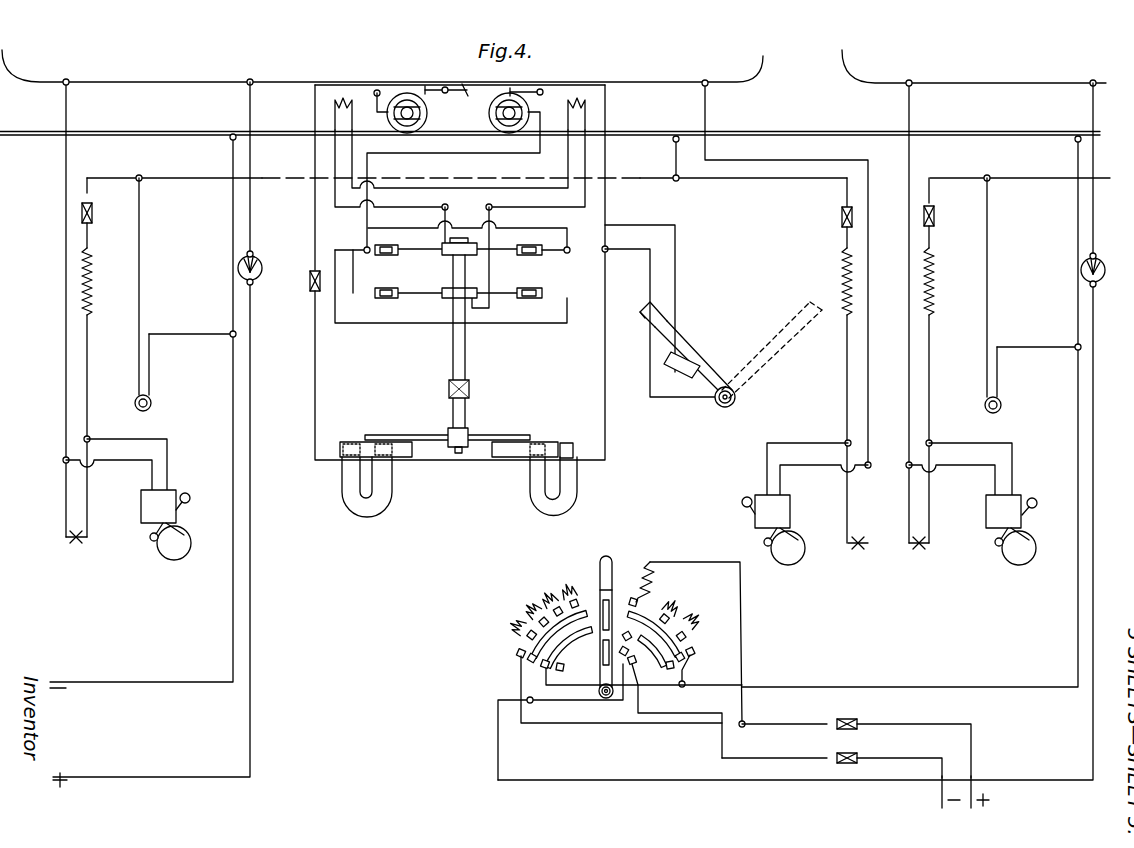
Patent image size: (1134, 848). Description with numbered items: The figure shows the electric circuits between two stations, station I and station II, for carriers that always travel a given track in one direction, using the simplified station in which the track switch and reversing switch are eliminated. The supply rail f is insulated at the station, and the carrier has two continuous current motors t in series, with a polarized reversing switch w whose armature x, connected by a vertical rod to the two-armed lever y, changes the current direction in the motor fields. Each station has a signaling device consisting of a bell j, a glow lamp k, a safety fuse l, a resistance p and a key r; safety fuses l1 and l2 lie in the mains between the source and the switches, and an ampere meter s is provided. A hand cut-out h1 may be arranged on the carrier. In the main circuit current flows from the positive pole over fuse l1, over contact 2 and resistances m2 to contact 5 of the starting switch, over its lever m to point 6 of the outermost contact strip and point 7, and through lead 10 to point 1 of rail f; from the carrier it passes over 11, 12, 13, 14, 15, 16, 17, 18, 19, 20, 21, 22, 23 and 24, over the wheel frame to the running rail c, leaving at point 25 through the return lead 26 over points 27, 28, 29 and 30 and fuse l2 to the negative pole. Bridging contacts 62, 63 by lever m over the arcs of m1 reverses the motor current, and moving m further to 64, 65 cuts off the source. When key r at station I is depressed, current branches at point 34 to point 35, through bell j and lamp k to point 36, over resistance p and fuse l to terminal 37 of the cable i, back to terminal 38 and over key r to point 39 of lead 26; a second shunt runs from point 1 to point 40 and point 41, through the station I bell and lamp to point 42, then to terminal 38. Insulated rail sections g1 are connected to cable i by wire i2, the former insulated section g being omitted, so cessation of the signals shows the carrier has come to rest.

The point of rail f 1 is at (254, 82).
The contact of starting switch 2 is at (519, 656).
The contact of starting switch 5 is at (577, 600).
The point of outermost contact strip 6 is at (530, 640).
The point of contact strip 7 is at (520, 722).
The lead 10 is at (251, 592).
The point of motor circuit 11 is at (374, 90).
The point of motor circuit 12 is at (406, 94).
The point of motor circuit 13 is at (448, 89).
The point of motor circuit 14 is at (508, 94).
The point of motor circuit 15 is at (520, 100).
The point of motor circuit 16 is at (368, 254).
The point of motor circuit 17 is at (545, 290).
The point of motor circuit 18 is at (450, 300).
The point of motor circuit 19 is at (492, 210).
The point of motor circuit 20 is at (449, 208).
The point of motor circuit 21 is at (450, 252).
The point of motor circuit 22 is at (526, 256).
The point of motor circuit 23 is at (610, 248).
The point of motor circuit 24 is at (544, 92).
The point of running rail c 25 is at (233, 134).
The return lead 26 is at (236, 262).
The point of return lead 27 is at (722, 724).
The point of return circuit 28 is at (548, 705).
The point of return circuit 29 is at (562, 672).
The point of return circuit 30 is at (636, 676).
The point of rail f at station II 34 is at (781, 261).
The point of signal circuit 35 is at (864, 470).
The point of signal circuit 36 is at (845, 446).
The terminal of cable i 37 is at (678, 181).
The terminal of cable i 38 is at (141, 176).
The point of return lead 39 is at (231, 337).
The point of rail circuit 40 is at (69, 80).
The point of signal circuit 41 is at (63, 461).
The point of signal circuit 42 is at (92, 438).
The contact of starting switch 62 is at (640, 604).
The contact of starting switch 63 is at (598, 640).
The contact of starting switch 64 is at (670, 620).
The contact of starting switch 65 is at (694, 656).
The running rails c is at (1110, 122).
The supply rail f is at (244, 82).
The cable i is at (186, 178).
The wire i2 is at (677, 160).
The insulated section of rail g is at (446, 120).
The insulated rail sections g1 is at (656, 133).
The safety fuse l is at (93, 212).
The safety fuse l1 is at (847, 720).
The safety fuse l2 is at (846, 754).
The resistance p is at (92, 280).
The ampere meter s is at (262, 268).
The key r is at (152, 403).
The glow lamp k is at (76, 545).
The bell j is at (178, 514).
The continuous current motors t is at (428, 90).
The two-armed lever y is at (368, 240).
The armature x is at (392, 436).
The reversing switch w is at (341, 478).
The hand cut-out h1 is at (682, 344).
The starting lever m is at (600, 560).
The contact arcs of starting switch m1 is at (520, 636).
The resistances m2 is at (548, 600).
The station I is at (111, 613).
The station II is at (926, 618).